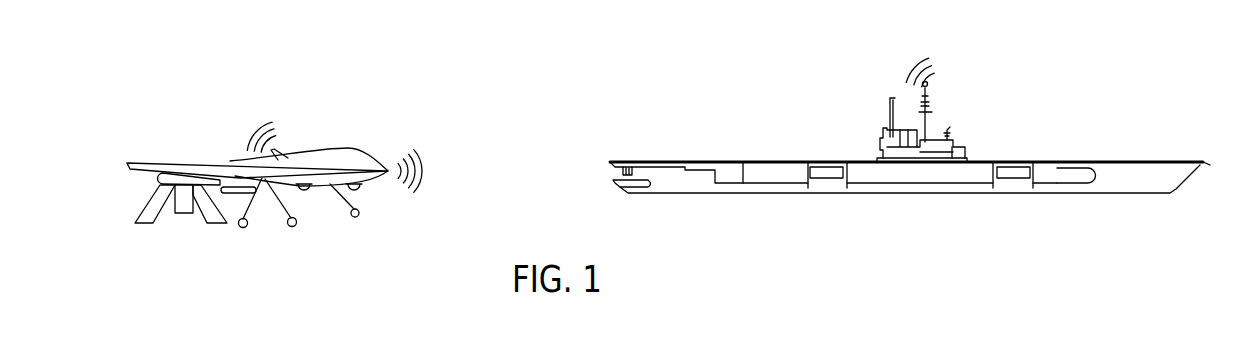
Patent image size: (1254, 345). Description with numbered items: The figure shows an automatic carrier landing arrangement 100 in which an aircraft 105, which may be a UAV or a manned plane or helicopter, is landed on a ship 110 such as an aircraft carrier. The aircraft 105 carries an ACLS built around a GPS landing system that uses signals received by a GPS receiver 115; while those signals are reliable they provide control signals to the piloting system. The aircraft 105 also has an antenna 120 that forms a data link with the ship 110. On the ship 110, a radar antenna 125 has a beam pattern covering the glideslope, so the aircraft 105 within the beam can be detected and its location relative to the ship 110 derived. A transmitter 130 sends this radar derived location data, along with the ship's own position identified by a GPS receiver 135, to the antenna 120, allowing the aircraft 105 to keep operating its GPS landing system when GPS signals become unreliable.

The system 100 is at (199, 93).
The aircraft 105 is at (131, 138).
The ship 110 is at (1000, 134).
The GPS receiver 115 is at (282, 160).
The antenna 120 is at (388, 168).
The radar antenna 125 is at (918, 117).
The transmitter 130 is at (930, 85).
The GPS receiver 135 is at (948, 140).